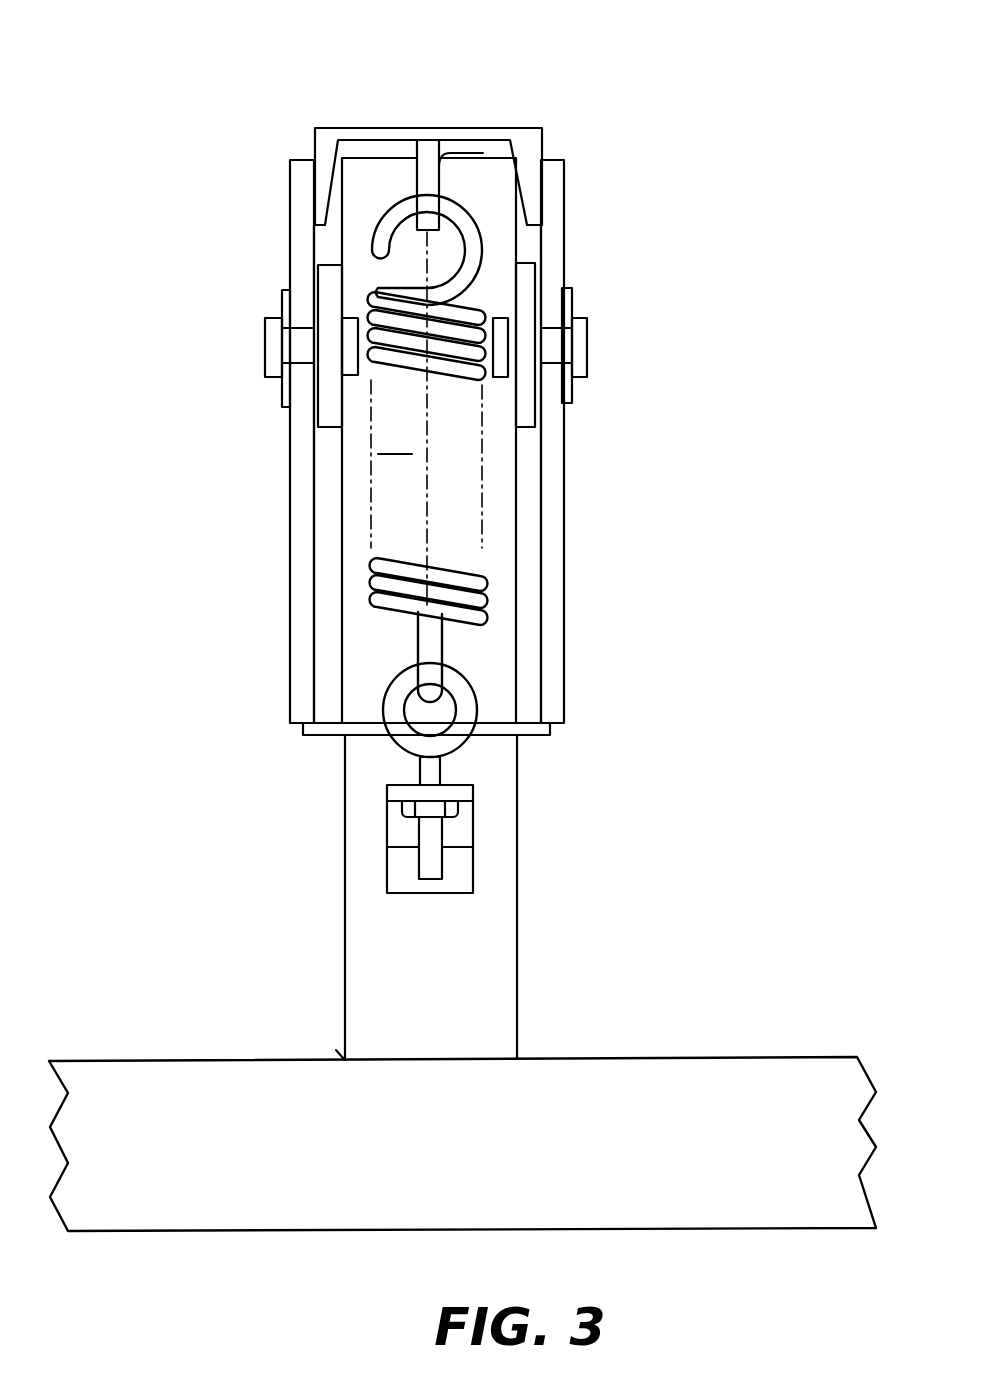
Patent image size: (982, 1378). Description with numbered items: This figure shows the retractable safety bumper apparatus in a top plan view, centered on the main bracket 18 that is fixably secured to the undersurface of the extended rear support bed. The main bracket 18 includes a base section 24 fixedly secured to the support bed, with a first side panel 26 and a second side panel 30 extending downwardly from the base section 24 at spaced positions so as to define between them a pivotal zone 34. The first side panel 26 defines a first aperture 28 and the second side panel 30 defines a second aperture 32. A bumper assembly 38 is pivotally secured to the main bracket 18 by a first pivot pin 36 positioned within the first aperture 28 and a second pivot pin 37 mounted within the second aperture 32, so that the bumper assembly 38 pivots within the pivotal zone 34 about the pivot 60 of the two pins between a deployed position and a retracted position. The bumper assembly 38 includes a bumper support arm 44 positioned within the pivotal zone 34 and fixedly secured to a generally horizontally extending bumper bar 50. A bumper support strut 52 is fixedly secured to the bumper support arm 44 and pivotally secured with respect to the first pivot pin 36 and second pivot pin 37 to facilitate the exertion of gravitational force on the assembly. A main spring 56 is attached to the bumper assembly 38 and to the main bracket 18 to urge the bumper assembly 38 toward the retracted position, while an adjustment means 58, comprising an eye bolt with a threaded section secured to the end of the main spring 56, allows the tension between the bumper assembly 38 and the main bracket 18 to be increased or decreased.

The main bracket 18 is at (558, 170).
The base section 24 is at (363, 157).
The first side panel 26 is at (293, 535).
The first aperture 28 is at (293, 342).
The second side panel 30 is at (562, 587).
The second aperture 32 is at (548, 335).
The pivotal zone 34 is at (318, 243).
The first pivot pin 36 is at (268, 364).
The second pivot pin 37 is at (585, 358).
The bumper assembly 38 is at (345, 1059).
The bumper support arm 44 is at (413, 977).
The bumper bar 50 is at (568, 1152).
The bumper support strut 52 is at (325, 287).
The main spring 56 is at (429, 457).
The adjustment means 58 is at (437, 772).
The pivot 60 is at (493, 368).